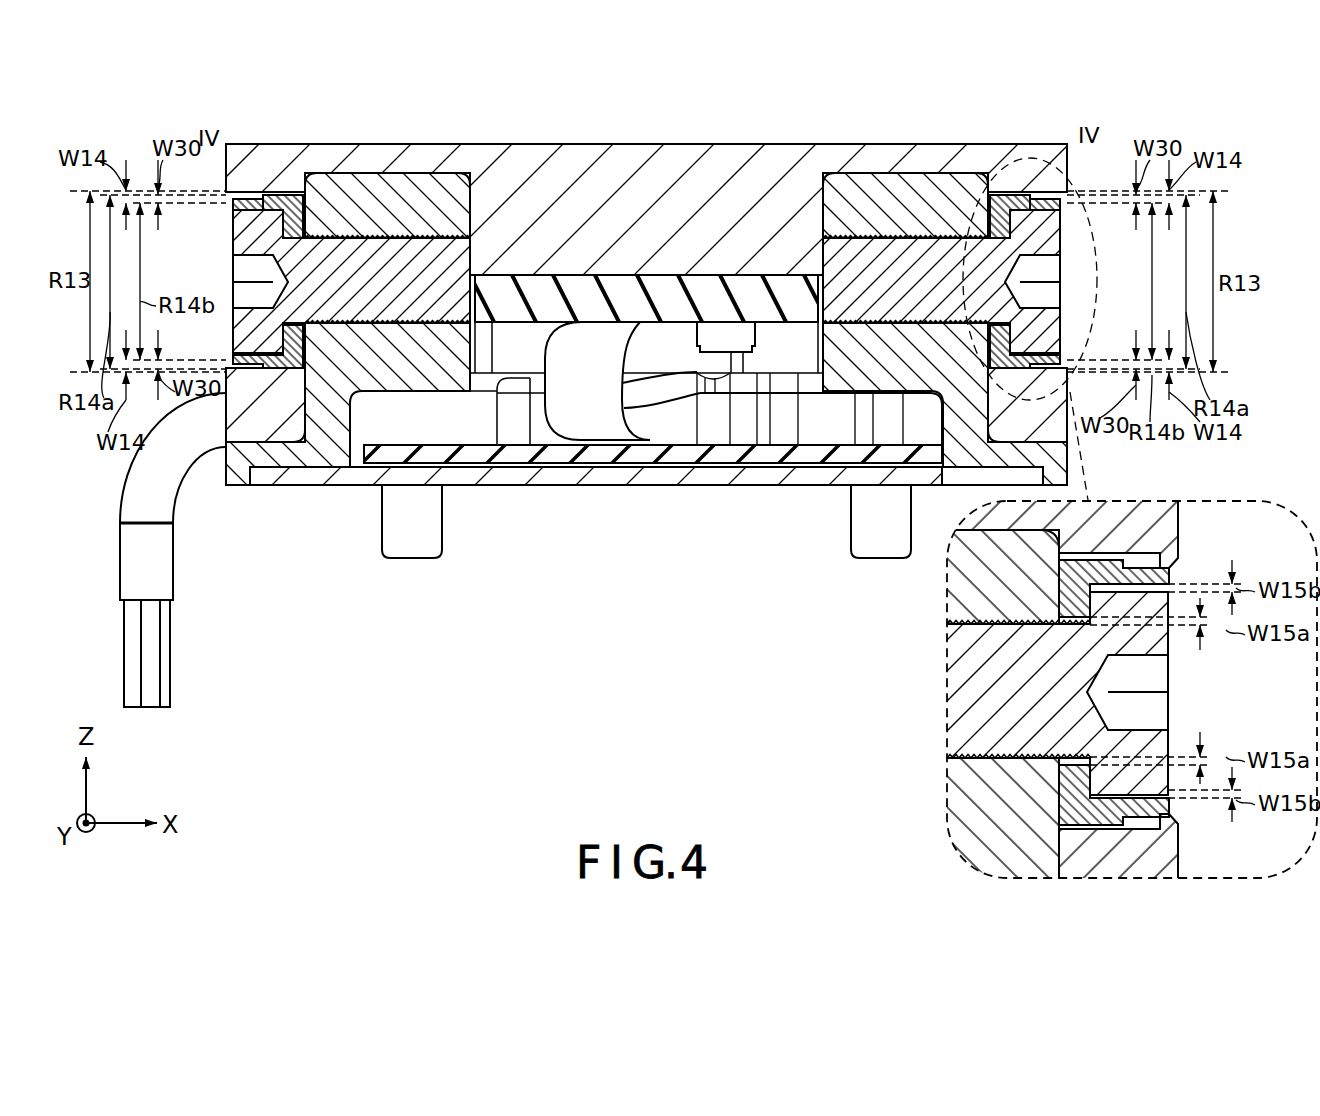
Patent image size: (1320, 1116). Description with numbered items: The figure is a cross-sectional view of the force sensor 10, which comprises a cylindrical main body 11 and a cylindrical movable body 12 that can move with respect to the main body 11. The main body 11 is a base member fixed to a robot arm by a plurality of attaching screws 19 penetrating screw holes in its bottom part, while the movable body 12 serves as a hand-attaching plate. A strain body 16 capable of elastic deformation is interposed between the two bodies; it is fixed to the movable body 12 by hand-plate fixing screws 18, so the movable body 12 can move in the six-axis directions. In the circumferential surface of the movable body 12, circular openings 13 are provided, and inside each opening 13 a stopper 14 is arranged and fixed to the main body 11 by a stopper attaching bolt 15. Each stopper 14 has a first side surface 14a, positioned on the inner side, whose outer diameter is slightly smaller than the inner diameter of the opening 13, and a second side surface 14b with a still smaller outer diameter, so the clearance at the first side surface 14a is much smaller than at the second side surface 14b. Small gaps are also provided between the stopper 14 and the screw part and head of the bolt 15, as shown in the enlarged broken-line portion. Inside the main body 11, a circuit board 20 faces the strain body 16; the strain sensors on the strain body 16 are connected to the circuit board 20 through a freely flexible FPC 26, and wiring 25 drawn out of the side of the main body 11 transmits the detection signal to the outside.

The force sensor 10 is at (226, 110).
The main body 11 is at (394, 218).
The movable body 12 is at (656, 226).
The opening 13 is at (226, 275).
The stopper 14 is at (230, 204).
The first side surface 14a is at (290, 196).
The second side surface 14b is at (244, 196).
The stopper attaching bolt 15 is at (380, 295).
The strain body 16 is at (656, 310).
The hand-plate fixing screw 18 is at (697, 340).
The attaching screw 19 is at (412, 560).
The circuit board 20 is at (640, 463).
The wiring 25 is at (120, 563).
The FPC 26 is at (594, 393).